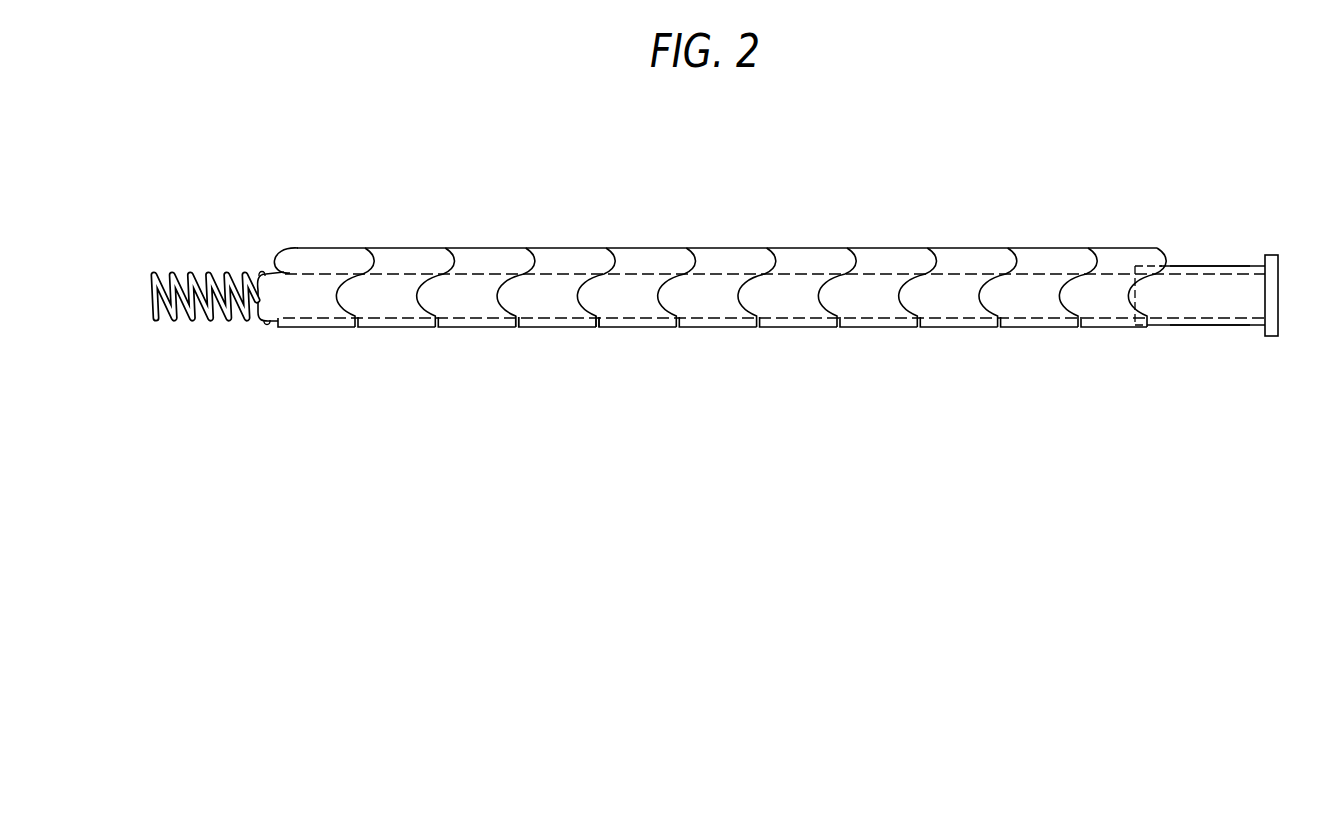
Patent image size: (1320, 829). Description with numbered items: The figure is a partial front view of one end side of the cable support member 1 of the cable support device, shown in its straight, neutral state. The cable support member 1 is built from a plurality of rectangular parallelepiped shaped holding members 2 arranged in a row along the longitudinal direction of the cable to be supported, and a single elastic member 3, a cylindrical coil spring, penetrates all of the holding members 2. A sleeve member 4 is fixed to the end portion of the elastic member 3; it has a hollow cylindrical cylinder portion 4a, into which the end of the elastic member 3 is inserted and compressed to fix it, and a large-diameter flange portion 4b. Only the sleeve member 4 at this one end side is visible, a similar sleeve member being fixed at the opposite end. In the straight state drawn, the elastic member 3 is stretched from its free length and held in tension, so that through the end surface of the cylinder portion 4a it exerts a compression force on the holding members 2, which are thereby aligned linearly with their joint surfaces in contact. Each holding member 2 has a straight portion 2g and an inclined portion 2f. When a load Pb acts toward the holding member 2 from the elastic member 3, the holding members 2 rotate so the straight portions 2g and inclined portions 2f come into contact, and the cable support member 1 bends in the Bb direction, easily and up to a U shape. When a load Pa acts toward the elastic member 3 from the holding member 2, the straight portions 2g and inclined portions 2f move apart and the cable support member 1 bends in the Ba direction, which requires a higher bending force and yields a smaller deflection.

The cable support member 1 is at (887, 228).
The holding member 2 is at (555, 258).
The inclined portion 2f is at (590, 329).
The straight portion 2g is at (521, 329).
The elastic member 3 is at (253, 325).
The sleeve member 4 is at (1214, 262).
The cylinder portion 4a is at (1198, 310).
The flange portion 4b is at (1272, 338).
The load Pa is at (637, 246).
The load Pb is at (637, 329).
The Ba direction Ba is at (136, 362).
The Bb direction Bb is at (140, 373).